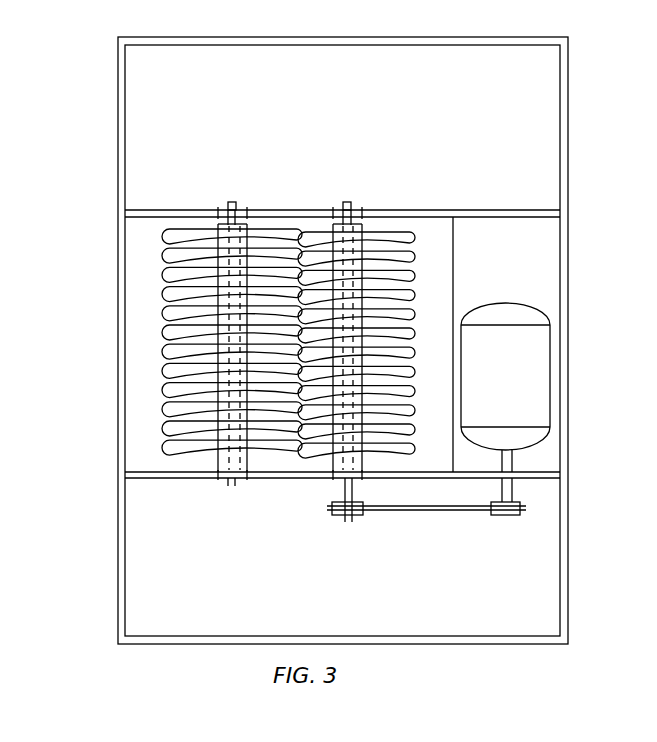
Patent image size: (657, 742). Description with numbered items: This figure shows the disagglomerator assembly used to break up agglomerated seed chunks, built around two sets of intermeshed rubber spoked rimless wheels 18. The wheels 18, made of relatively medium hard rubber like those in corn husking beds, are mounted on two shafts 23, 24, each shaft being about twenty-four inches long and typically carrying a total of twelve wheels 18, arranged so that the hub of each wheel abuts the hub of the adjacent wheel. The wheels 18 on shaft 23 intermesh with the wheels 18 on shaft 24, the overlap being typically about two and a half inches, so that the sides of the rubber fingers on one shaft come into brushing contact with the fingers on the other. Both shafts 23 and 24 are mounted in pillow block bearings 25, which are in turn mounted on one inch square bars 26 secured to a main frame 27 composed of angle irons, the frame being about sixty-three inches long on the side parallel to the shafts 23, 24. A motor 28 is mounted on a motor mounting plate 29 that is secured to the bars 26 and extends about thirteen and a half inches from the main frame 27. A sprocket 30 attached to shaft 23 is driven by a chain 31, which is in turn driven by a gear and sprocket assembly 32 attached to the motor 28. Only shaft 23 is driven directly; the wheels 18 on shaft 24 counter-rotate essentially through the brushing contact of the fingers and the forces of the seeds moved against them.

The rubber spoked rimless wheels 18 is at (413, 258).
The shaft 23 is at (348, 202).
The shaft 24 is at (232, 202).
The pillow block bearings 25 is at (225, 208).
The square bars 26 is at (395, 210).
The main frame 27 is at (118, 322).
The motor 28 is at (508, 363).
The motor mounting plate 29 is at (507, 267).
The sprocket 30 is at (340, 515).
The chain 31 is at (427, 511).
The gear and sprocket assembly 32 is at (507, 515).